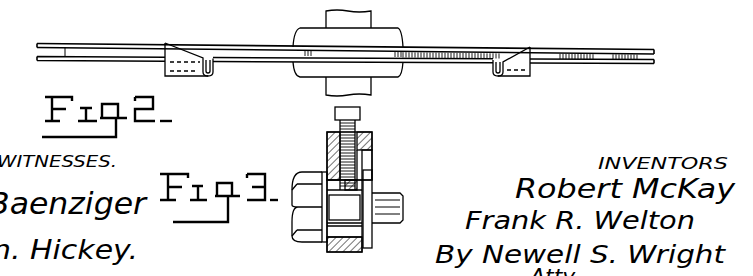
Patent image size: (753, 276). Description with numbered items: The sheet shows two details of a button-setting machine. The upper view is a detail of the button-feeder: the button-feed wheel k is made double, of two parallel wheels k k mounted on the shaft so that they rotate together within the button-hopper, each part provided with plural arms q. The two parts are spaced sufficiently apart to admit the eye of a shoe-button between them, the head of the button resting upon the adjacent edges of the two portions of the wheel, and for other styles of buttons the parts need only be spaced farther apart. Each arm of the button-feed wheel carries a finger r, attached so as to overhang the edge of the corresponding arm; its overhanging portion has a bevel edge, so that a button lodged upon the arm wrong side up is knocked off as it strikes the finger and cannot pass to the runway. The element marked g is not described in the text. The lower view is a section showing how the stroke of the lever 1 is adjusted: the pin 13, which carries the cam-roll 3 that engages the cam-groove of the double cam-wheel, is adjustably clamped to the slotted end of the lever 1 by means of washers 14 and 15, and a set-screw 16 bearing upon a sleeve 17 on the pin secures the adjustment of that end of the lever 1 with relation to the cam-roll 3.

In FIG. 2, the arms q is at (128, 44).
In FIG. 2, the button-feed wheel k is at (471, 53).
In FIG. 2, the central hub coupling g is at (371, 83).
In FIG. 2, the finger r is at (186, 77).
In FIG. 3, the set-screw 16 is at (335, 113).
In FIG. 3, the lever 1 is at (327, 150).
In FIG. 3, the sleeve 17 is at (344, 207).
In FIG. 3, the pin 13 is at (294, 207).
In FIG. 3, the washer 15 is at (323, 235).
In FIG. 3, the washer 14 is at (372, 238).
In FIG. 3, the cam-roll 3 is at (386, 196).